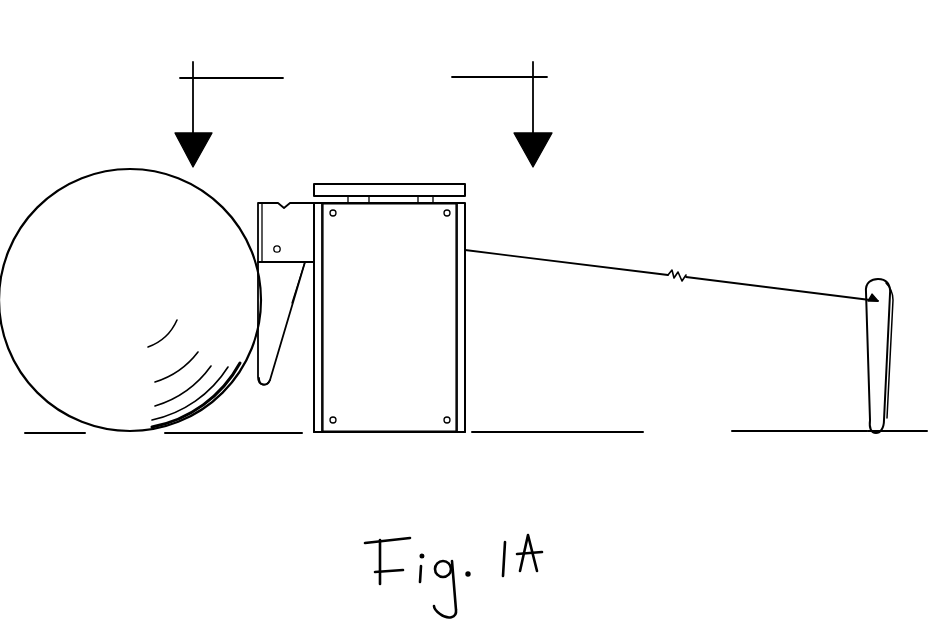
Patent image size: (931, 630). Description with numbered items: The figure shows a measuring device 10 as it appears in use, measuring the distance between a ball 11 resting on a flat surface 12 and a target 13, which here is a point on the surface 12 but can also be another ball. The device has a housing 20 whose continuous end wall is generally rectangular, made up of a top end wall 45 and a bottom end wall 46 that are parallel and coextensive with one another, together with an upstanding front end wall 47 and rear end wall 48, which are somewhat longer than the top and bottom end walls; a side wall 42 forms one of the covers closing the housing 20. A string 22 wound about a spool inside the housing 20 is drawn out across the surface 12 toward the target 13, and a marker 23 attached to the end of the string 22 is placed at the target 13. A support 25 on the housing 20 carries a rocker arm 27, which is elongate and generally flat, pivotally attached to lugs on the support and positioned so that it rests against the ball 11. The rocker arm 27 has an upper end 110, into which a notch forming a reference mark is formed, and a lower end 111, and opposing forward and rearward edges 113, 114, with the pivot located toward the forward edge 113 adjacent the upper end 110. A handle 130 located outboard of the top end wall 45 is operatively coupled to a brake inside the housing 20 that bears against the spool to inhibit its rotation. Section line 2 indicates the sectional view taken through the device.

The section line 2- 2 is at (363, 96).
The measuring device 10 is at (591, 205).
The ball 11 is at (80, 193).
The flat surface 12 is at (537, 431).
The target 13 is at (863, 422).
The housing 20 is at (468, 232).
The string 22 is at (615, 267).
The marker 23 is at (865, 333).
The support 25 is at (303, 243).
The rocker arm 27 is at (283, 328).
The side wall 42 is at (405, 400).
The top end wall 45 is at (368, 197).
The bottom end wall 46 is at (380, 433).
The front end wall 47 is at (313, 362).
The rear end wall 48 is at (465, 328).
The upper end 110 is at (258, 203).
The lower end 111 is at (276, 379).
The forward edge 113 is at (260, 341).
The rearward edge 114 is at (298, 302).
The handle 130 is at (385, 193).